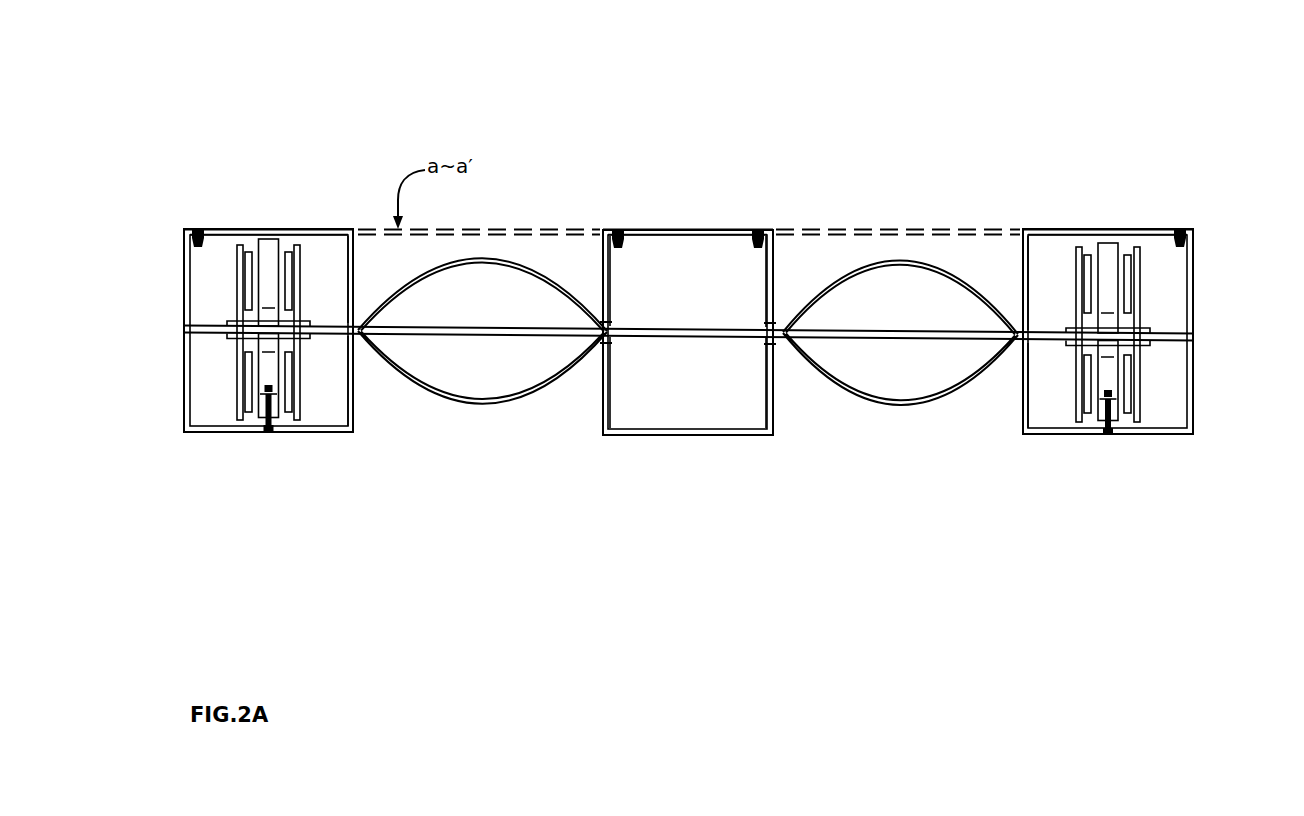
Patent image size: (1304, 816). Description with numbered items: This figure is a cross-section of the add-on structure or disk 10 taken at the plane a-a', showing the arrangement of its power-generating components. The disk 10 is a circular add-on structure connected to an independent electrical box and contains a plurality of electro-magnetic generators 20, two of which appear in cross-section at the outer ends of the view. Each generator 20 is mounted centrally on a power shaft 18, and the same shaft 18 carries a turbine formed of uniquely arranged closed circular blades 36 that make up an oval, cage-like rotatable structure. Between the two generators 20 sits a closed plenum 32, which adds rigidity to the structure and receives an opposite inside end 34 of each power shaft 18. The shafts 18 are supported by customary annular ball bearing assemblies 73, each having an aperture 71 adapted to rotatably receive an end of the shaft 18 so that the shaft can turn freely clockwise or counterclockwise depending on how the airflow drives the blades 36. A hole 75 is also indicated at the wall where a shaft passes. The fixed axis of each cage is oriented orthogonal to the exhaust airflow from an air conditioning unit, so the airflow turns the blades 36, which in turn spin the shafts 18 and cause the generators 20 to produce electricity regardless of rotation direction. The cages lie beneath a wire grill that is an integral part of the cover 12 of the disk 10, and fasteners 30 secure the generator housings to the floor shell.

The disk 10 is at (215, 228).
The cover 12 is at (1088, 232).
The shaft 18 is at (322, 327).
The electro-magnetic generator 20 is at (232, 449).
The bolt 30 is at (268, 433).
The closed plenum 32 is at (688, 229).
The opposite inside end 34 is at (605, 334).
The closed circular blades 36 is at (512, 401).
The aperture 71 is at (184, 326).
The annular ball bearing assembly 73 is at (607, 329).
The hole 75 is at (355, 337).